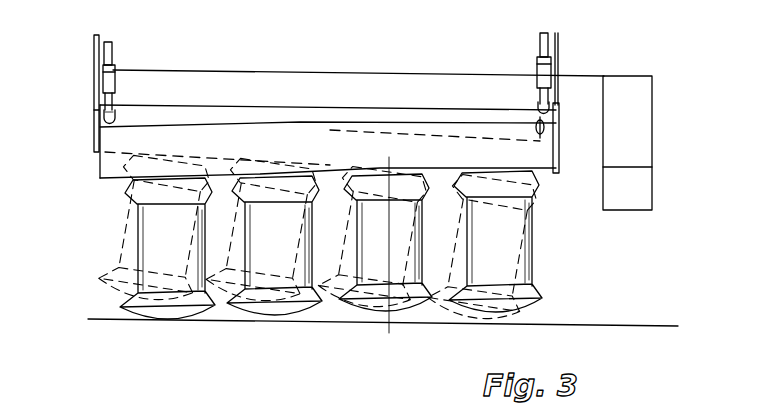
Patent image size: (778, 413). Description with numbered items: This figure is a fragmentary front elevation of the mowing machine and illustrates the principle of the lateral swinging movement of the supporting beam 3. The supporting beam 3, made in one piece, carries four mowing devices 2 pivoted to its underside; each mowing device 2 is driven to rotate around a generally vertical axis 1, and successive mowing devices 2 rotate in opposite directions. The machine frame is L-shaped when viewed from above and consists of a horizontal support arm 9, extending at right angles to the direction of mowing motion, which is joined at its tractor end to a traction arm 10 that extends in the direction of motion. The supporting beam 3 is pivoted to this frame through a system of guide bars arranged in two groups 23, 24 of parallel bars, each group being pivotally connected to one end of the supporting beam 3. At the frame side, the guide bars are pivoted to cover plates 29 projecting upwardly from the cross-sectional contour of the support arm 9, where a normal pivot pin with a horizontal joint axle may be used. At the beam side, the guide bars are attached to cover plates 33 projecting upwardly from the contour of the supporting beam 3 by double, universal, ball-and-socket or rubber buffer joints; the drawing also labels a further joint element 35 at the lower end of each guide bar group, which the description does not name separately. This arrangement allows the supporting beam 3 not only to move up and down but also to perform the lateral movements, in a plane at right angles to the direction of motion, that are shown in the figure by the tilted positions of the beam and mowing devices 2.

The vertical axis 1 is at (392, 268).
The mowing device 2 is at (534, 248).
The supporting beam 3 is at (112, 178).
The support arm 9 is at (247, 72).
The traction arm 10 is at (645, 141).
The group of parallel guide bars 23 is at (120, 73).
The group of parallel guide bars 24 is at (553, 94).
The cover plate 29 is at (100, 48).
The cover plate 33 is at (96, 112).
The pin 35 is at (115, 116).